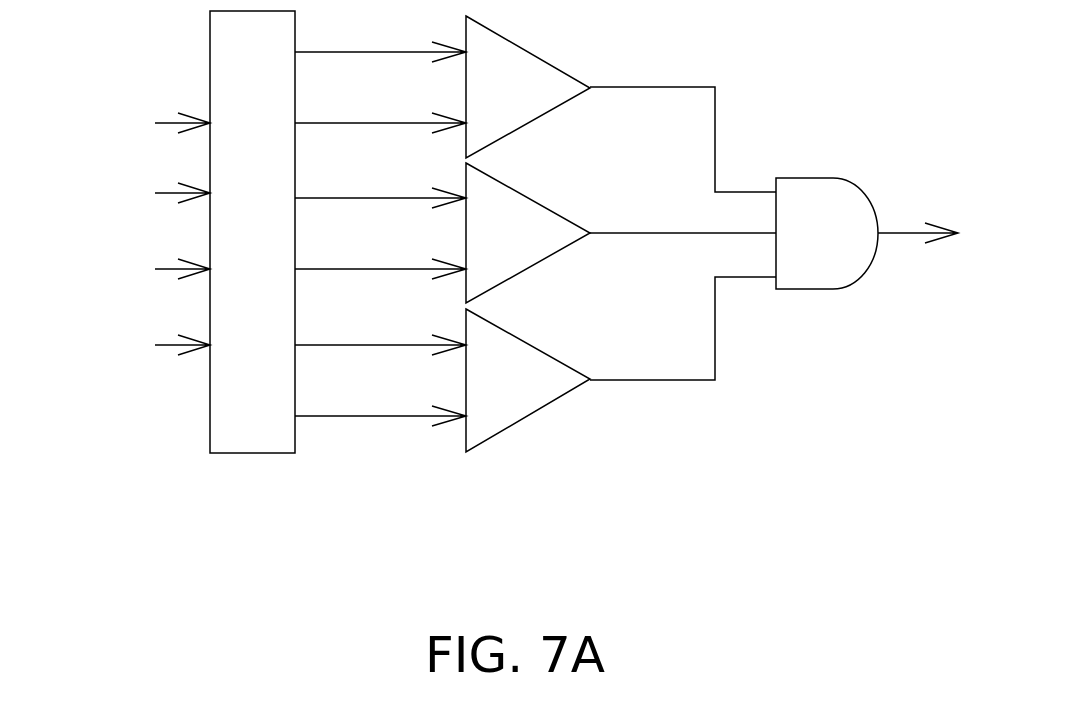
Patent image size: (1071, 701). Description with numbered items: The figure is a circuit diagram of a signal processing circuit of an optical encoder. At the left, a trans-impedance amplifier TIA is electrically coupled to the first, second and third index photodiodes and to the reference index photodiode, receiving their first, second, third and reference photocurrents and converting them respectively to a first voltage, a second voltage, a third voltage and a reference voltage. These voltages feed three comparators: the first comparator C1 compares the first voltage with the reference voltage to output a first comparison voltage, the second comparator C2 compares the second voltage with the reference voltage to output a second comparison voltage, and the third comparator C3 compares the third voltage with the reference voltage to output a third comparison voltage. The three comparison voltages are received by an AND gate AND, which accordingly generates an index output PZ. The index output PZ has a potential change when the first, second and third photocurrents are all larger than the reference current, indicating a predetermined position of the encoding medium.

The trans-impedance amplifier TIA is at (252, 232).
The first comparator C1 is at (528, 87).
The second comparator C2 is at (528, 233).
The third comparator C3 is at (528, 380).
The AND gate AND is at (827, 233).
The index output PZ is at (918, 216).